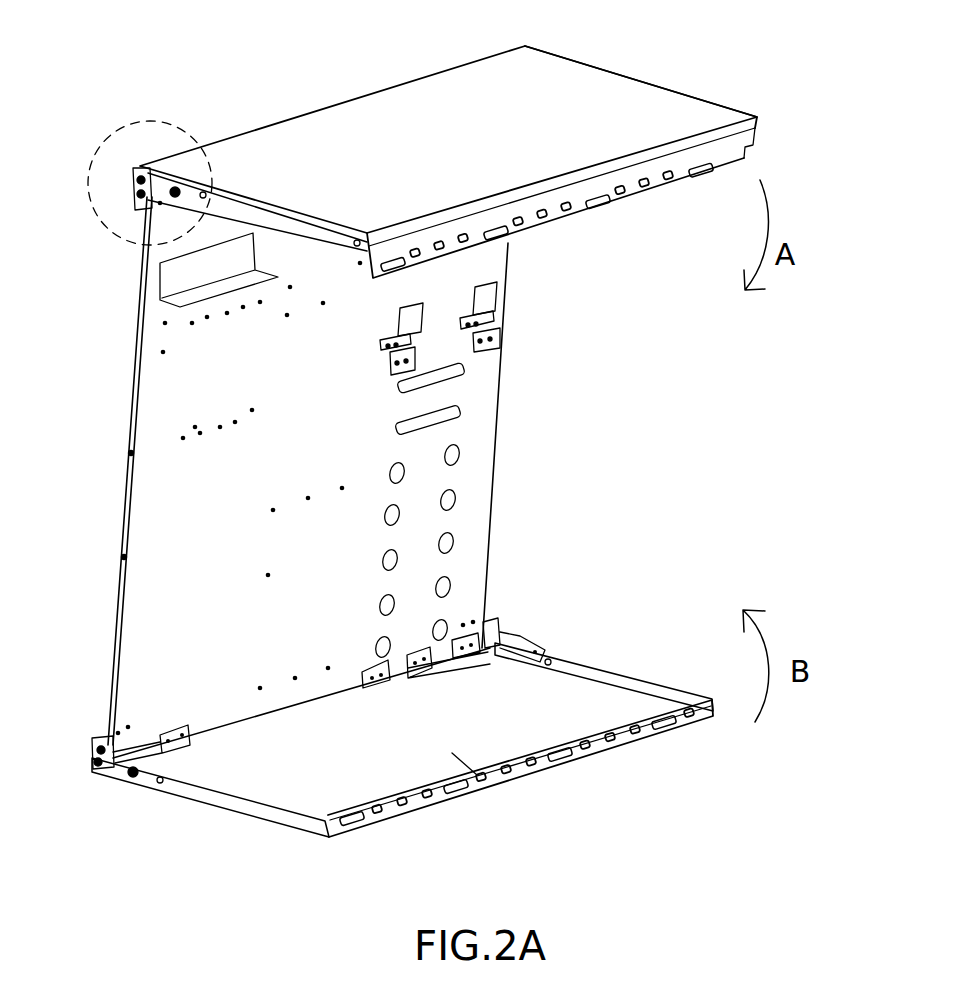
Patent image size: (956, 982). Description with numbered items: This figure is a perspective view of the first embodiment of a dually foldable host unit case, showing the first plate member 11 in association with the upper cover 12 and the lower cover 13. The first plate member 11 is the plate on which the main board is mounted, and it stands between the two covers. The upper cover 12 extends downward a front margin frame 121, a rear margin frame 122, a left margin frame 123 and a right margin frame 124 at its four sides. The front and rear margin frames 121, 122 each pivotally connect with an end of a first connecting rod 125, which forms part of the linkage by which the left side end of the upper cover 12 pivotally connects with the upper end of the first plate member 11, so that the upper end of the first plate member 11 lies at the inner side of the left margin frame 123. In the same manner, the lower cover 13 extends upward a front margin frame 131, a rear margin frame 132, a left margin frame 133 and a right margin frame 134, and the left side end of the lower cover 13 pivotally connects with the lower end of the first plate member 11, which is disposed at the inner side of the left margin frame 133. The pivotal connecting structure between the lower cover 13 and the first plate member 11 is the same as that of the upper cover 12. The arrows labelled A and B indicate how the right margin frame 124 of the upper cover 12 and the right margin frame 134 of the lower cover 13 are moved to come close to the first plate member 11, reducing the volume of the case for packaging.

The first plate member 11 is at (482, 463).
The upper cover 12 is at (622, 92).
The front margin frame 121 is at (740, 108).
The rear margin frame 122 is at (238, 203).
The left margin frame 123 is at (350, 100).
The right margin frame 124 is at (750, 157).
The first connecting rod 125 is at (147, 173).
The lower cover 13 is at (492, 780).
The front margin frame 131 is at (622, 683).
The rear margin frame 132 is at (250, 808).
The left margin frame 133 is at (93, 748).
The right margin frame 134 is at (650, 733).